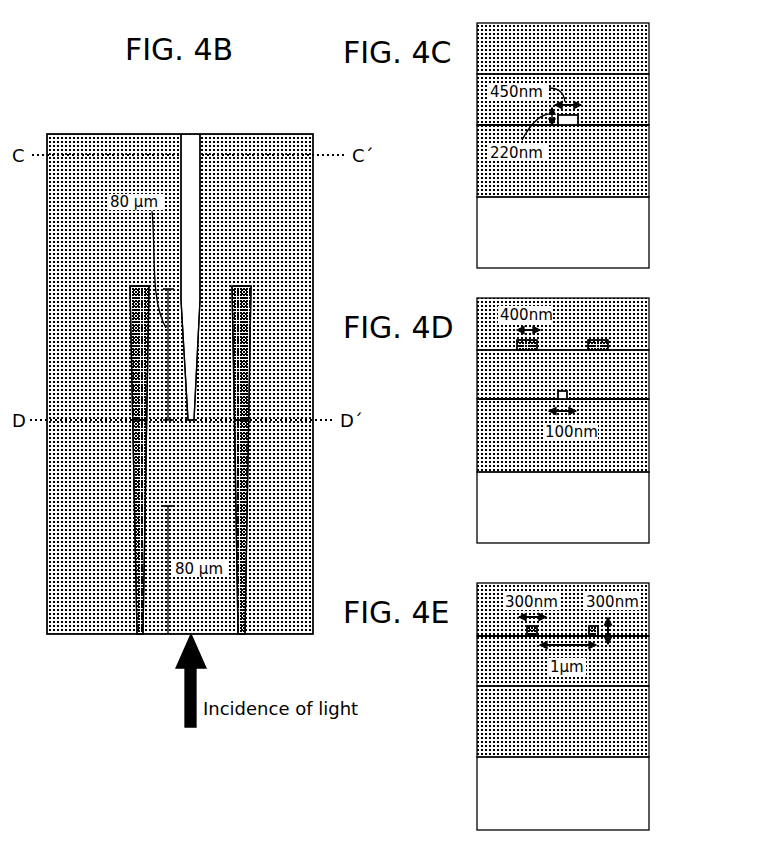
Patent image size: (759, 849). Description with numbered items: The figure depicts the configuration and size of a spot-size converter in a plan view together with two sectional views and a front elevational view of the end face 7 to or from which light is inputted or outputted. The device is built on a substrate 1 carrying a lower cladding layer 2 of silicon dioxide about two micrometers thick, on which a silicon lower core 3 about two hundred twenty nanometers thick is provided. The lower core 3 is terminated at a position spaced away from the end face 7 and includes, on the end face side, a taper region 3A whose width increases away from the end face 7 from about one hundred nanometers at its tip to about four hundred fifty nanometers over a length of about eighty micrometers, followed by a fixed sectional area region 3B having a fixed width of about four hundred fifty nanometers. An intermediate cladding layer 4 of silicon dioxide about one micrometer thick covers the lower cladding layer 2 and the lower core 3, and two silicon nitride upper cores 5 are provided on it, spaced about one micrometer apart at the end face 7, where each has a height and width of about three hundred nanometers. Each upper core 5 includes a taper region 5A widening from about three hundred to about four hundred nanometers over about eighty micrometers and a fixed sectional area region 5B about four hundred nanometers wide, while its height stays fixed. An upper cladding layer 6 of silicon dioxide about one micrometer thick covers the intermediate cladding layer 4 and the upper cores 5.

In FIG. 4C, the substrate 1 is at (623, 235).
In FIG. 4D, the substrate 1 is at (623, 510).
In FIG. 4E, the substrate 1 is at (627, 808).
In FIG. 4C, the lower cladding layer 2 is at (625, 177).
In FIG. 4D, the lower cladding layer 2 is at (627, 452).
In FIG. 4E, the lower cladding layer 2 is at (630, 737).
In FIG. 4B, the lower core 3 is at (208, 233).
In FIG. 4C, the lower core 3 is at (576, 118).
In FIG. 4D, the lower core 3 is at (567, 396).
In FIG. 4B, the taper region 3A is at (196, 378).
In FIG. 4D, the taper region 3A is at (562, 395).
In FIG. 4B, the fixed sectional area region 3B is at (196, 203).
In FIG. 4C, the fixed sectional area region 3B is at (568, 120).
In FIG. 4C, the intermediate cladding layer 4 is at (625, 92).
In FIG. 4D, the intermediate cladding layer 4 is at (625, 366).
In FIG. 4E, the intermediate cladding layer 4 is at (628, 663).
In FIG. 4B, the upper cores 5 is at (124, 457).
In FIG. 4D, the upper cores 5 is at (598, 340).
In FIG. 4E, the upper cores 5 is at (590, 626).
In FIG. 4B, the taper region 5A is at (137, 578).
In FIG. 4E, the taper region 5A is at (562, 631).
In FIG. 4B, the fixed sectional area region 5B is at (133, 318).
In FIG. 4D, the fixed sectional area region 5B is at (562, 345).
In FIG. 4B, the upper cladding layer 6 is at (64, 530).
In FIG. 4C, the upper cladding layer 6 is at (625, 52).
In FIG. 4D, the upper cladding layer 6 is at (625, 328).
In FIG. 4E, the upper cladding layer 6 is at (628, 622).
In FIG. 4B, the end face 7 is at (92, 639).